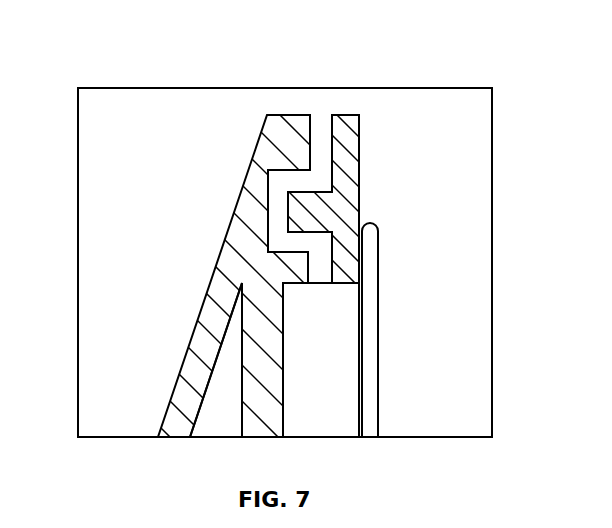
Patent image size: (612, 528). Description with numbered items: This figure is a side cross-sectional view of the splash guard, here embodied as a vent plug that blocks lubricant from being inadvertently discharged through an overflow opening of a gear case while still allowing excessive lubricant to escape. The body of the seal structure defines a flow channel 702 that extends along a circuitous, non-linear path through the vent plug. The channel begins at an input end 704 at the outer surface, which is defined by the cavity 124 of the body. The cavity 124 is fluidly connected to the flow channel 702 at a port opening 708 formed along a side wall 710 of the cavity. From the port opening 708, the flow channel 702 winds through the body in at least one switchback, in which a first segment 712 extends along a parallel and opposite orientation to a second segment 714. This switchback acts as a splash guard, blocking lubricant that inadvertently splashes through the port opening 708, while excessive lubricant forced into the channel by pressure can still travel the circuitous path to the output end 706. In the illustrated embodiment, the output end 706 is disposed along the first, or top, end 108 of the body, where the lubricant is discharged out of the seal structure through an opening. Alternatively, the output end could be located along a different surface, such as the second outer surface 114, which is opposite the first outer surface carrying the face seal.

The first end of the body 108 is at (281, 104).
The flow channel 702 is at (259, 205).
The output end 706 is at (324, 104).
The second segment 714 is at (282, 174).
The second outer surface 114 is at (242, 283).
The first segment 712 is at (308, 232).
The port opening 708 is at (312, 293).
The input end 704 is at (372, 294).
The side wall 710 is at (342, 283).
The cavity 124 is at (349, 387).